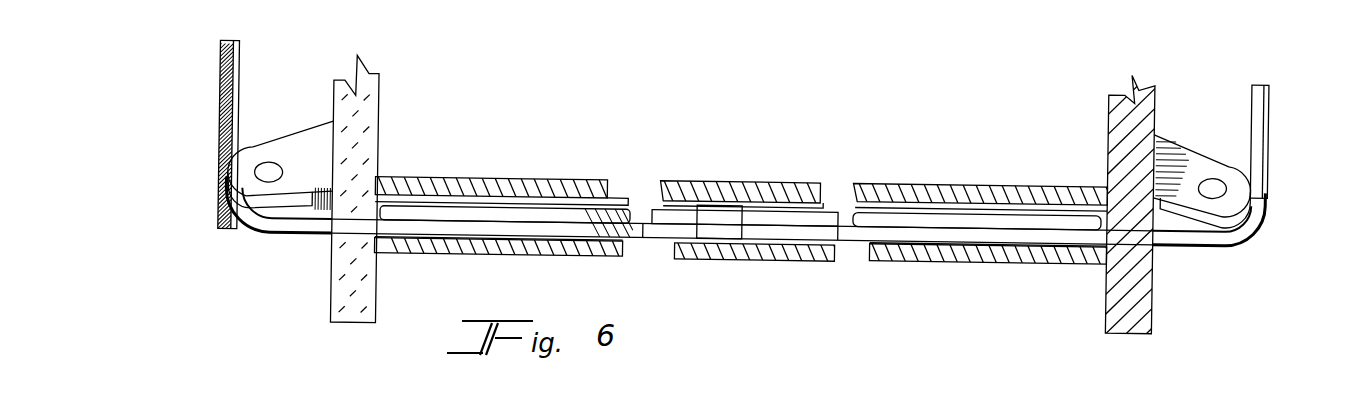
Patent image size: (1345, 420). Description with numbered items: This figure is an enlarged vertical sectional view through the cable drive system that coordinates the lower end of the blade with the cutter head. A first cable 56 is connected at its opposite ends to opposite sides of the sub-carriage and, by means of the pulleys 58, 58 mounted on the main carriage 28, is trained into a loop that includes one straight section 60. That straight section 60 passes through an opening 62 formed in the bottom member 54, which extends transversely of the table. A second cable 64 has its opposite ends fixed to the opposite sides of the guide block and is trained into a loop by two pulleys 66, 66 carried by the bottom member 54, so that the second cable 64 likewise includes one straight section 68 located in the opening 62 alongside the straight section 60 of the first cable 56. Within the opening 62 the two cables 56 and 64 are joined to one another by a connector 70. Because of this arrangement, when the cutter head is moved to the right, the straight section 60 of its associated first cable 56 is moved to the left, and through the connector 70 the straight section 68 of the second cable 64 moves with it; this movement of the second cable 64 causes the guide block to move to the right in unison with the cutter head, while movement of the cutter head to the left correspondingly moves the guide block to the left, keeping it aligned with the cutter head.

The main carriage 28 is at (367, 71).
The bottom member 54 is at (460, 180).
The first cable 56 is at (237, 83).
The pulleys 58 is at (218, 197).
The straight section 60 is at (578, 239).
The opening 62 is at (777, 194).
The second cable 64 is at (547, 199).
The pulleys 66 is at (490, 235).
The straight section 68 is at (870, 212).
The connector 70 is at (723, 222).